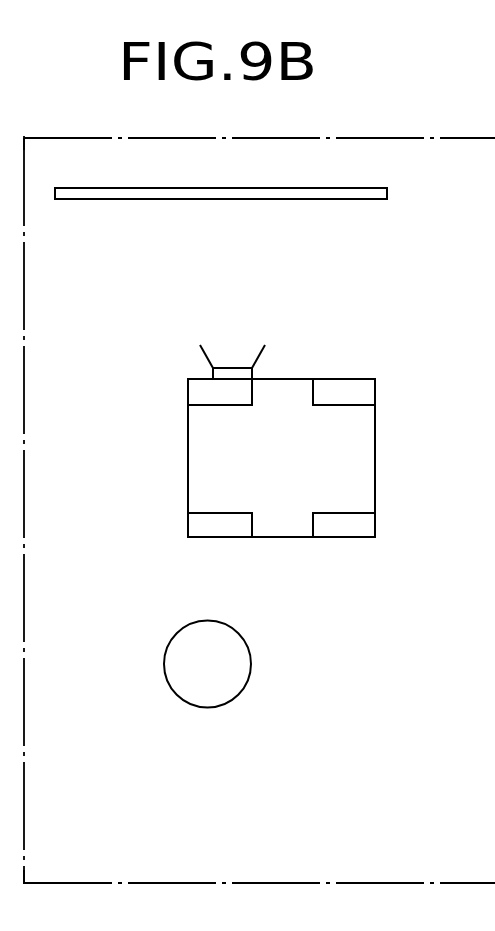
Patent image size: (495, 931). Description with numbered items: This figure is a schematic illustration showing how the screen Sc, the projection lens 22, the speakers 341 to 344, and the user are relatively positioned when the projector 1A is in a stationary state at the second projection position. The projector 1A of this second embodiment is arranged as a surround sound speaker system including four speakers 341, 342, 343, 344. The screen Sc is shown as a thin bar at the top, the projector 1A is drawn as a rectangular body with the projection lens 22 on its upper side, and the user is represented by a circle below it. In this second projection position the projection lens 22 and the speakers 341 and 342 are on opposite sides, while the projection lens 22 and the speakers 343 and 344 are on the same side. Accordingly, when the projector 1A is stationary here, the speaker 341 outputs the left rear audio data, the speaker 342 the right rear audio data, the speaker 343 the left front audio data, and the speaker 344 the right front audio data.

The screen Sc is at (388, 190).
The projector 1A is at (367, 567).
The projection lens 22 is at (253, 377).
The speaker 341 is at (192, 525).
The speaker 342 is at (372, 521).
The speaker 343 is at (196, 396).
The speaker 344 is at (372, 391).